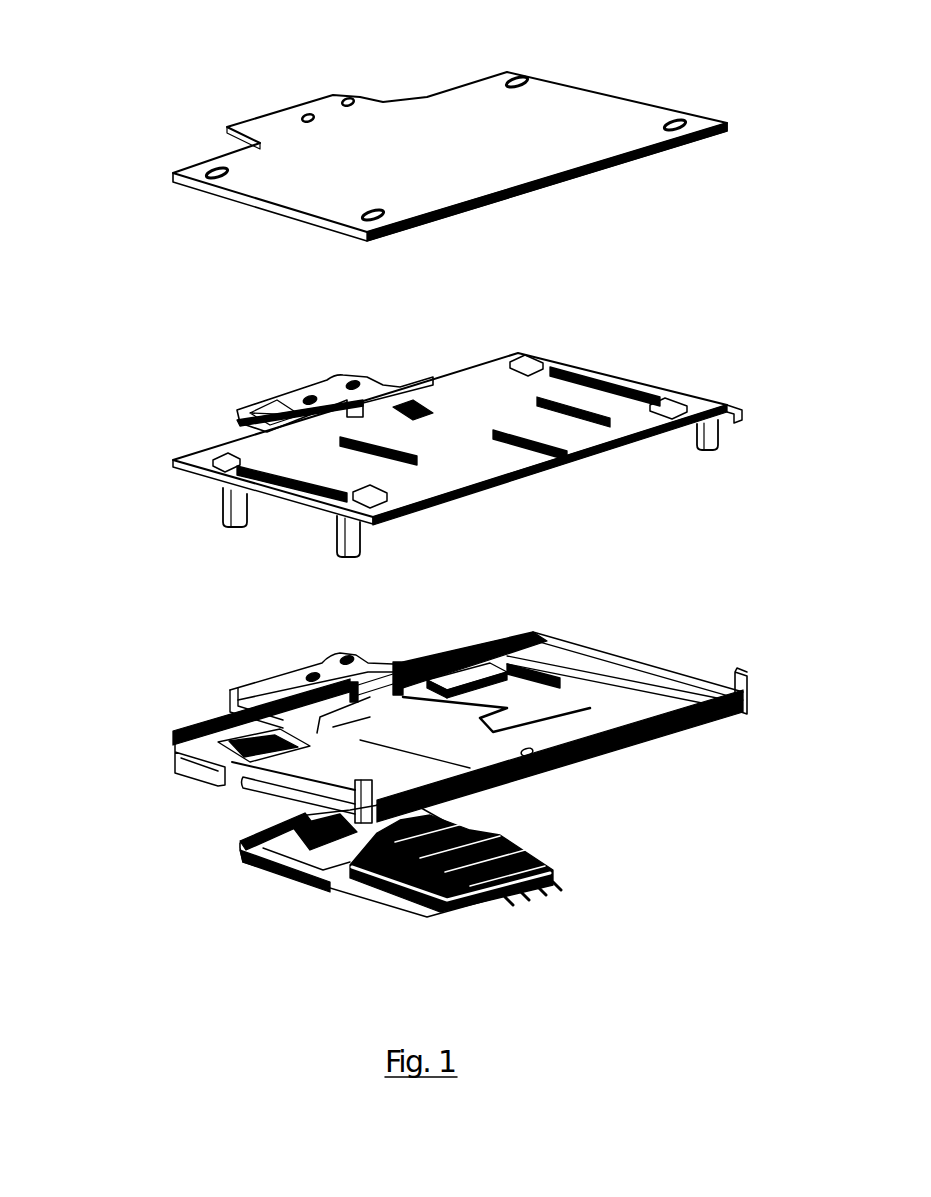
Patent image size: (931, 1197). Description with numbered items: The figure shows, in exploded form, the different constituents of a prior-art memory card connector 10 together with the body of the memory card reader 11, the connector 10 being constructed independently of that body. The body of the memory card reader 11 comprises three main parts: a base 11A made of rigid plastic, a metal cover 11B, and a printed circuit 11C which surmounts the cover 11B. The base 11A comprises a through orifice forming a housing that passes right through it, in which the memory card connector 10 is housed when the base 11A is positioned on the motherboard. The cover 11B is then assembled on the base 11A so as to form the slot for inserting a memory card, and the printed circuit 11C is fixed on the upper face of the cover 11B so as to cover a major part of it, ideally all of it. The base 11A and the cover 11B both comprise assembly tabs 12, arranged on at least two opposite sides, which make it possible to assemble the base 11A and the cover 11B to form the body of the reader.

The memory card connector 10 is at (600, 807).
The body of the memory card reader 11 is at (436, 419).
The base 11A is at (460, 710).
The cover 11B is at (392, 450).
The printed circuit 11C is at (573, 90).
The assembly tabs 12 is at (222, 500).